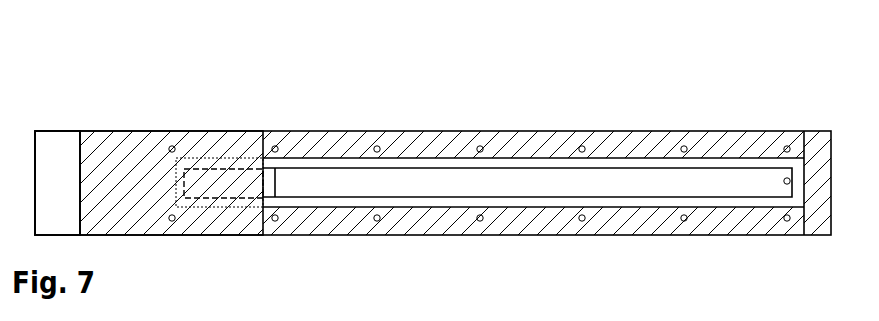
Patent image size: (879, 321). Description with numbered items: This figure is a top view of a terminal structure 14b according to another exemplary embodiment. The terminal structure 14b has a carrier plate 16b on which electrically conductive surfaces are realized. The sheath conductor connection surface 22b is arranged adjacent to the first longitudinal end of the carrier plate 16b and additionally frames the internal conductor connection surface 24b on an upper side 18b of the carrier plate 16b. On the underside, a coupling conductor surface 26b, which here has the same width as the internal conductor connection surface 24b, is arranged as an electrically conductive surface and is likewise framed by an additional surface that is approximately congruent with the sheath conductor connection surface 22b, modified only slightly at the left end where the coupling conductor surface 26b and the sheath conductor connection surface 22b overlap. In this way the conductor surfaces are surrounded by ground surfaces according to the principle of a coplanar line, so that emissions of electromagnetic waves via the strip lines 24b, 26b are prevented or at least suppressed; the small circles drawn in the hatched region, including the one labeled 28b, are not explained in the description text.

The terminal structure 14b is at (361, 78).
The carrier plate 16b is at (54, 145).
The upper side 18b is at (57, 183).
The sheath conductor connection surface 22b is at (208, 143).
The internal conductor connection surface 24b is at (485, 172).
The coupling conductor surface 26b is at (230, 198).
The opening 28b is at (786, 178).